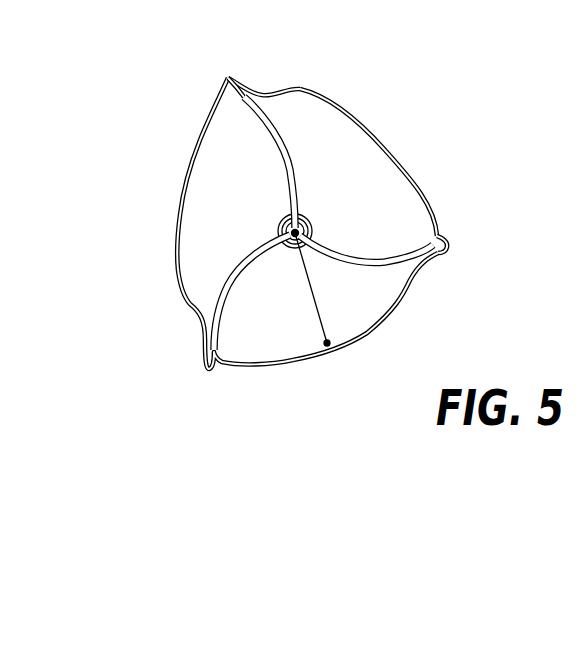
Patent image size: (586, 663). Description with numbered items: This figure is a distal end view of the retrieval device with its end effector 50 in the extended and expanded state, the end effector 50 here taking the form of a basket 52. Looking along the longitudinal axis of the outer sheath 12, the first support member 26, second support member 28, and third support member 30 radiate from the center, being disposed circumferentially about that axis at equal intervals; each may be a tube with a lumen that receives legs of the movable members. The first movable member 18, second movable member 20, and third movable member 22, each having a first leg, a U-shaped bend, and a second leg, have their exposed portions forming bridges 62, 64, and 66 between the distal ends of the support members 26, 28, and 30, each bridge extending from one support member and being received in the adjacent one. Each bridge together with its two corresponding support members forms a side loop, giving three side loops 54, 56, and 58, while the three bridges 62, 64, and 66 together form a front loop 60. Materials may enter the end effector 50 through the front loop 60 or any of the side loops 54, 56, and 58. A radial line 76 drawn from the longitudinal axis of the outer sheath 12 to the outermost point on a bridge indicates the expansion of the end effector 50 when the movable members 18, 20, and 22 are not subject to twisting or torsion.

The outer sheath 12 is at (304, 218).
The first movable member 18 is at (230, 65).
The second movable member 20 is at (199, 357).
The third movable member 22 is at (444, 257).
The first support member 26 is at (295, 140).
The second support member 28 is at (243, 256).
The third support member 30 is at (364, 258).
The end effector 50 is at (297, 192).
The basket 52 is at (354, 323).
The first side loop 54 is at (353, 145).
The second side loop 56 is at (292, 328).
The third side loop 58 is at (178, 275).
The front loop 60 is at (382, 160).
The first bridge 62 is at (287, 90).
The second bridge 64 is at (194, 253).
The third bridge 66 is at (406, 290).
The radial line 76 is at (314, 297).